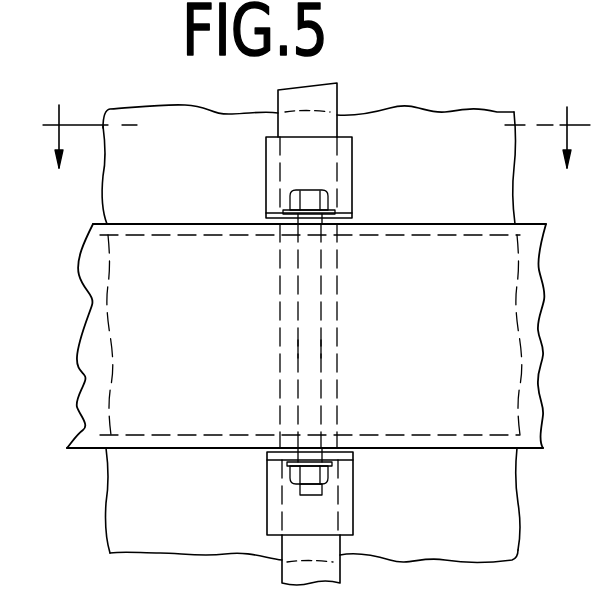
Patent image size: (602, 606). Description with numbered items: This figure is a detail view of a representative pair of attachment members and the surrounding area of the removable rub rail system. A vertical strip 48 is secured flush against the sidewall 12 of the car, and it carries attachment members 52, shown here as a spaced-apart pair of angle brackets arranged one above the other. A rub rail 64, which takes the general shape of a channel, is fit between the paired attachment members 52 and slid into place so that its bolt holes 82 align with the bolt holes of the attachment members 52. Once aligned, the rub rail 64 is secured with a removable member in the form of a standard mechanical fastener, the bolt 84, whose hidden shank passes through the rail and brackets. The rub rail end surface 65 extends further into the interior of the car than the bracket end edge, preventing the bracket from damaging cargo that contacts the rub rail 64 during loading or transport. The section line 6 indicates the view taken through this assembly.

The section line 6- 6 is at (310, 131).
The sidewall 12 is at (166, 173).
The vertical strip 48 is at (330, 98).
The attachment member 52 is at (345, 165).
The rub rail 64 is at (500, 282).
The bolt hole 82 is at (311, 442).
The bolt 84 is at (307, 352).
The rub rail end surface 65 is at (512, 10).